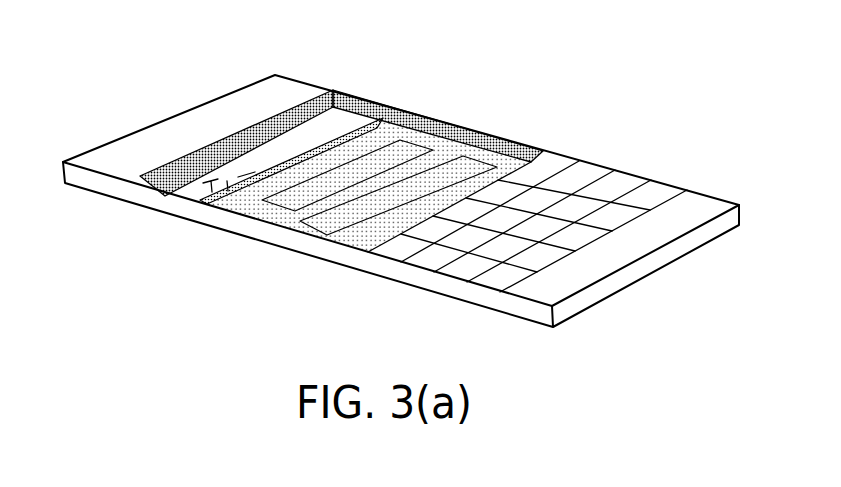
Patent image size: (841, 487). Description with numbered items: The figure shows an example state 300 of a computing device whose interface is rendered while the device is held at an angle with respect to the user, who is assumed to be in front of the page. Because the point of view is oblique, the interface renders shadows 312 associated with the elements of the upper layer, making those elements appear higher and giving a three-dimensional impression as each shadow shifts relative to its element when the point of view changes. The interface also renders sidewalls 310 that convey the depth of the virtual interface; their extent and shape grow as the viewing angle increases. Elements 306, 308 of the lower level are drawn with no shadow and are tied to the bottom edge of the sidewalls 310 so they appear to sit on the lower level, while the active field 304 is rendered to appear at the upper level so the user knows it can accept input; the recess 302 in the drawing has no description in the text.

The state of a computing device 300 is at (643, 69).
The recess 302 is at (437, 121).
The active field 304 is at (199, 200).
The lower level element 306 is at (267, 215).
The lower level element 308 is at (327, 235).
The sidewalls 310 is at (515, 148).
The shadows 312 is at (360, 134).